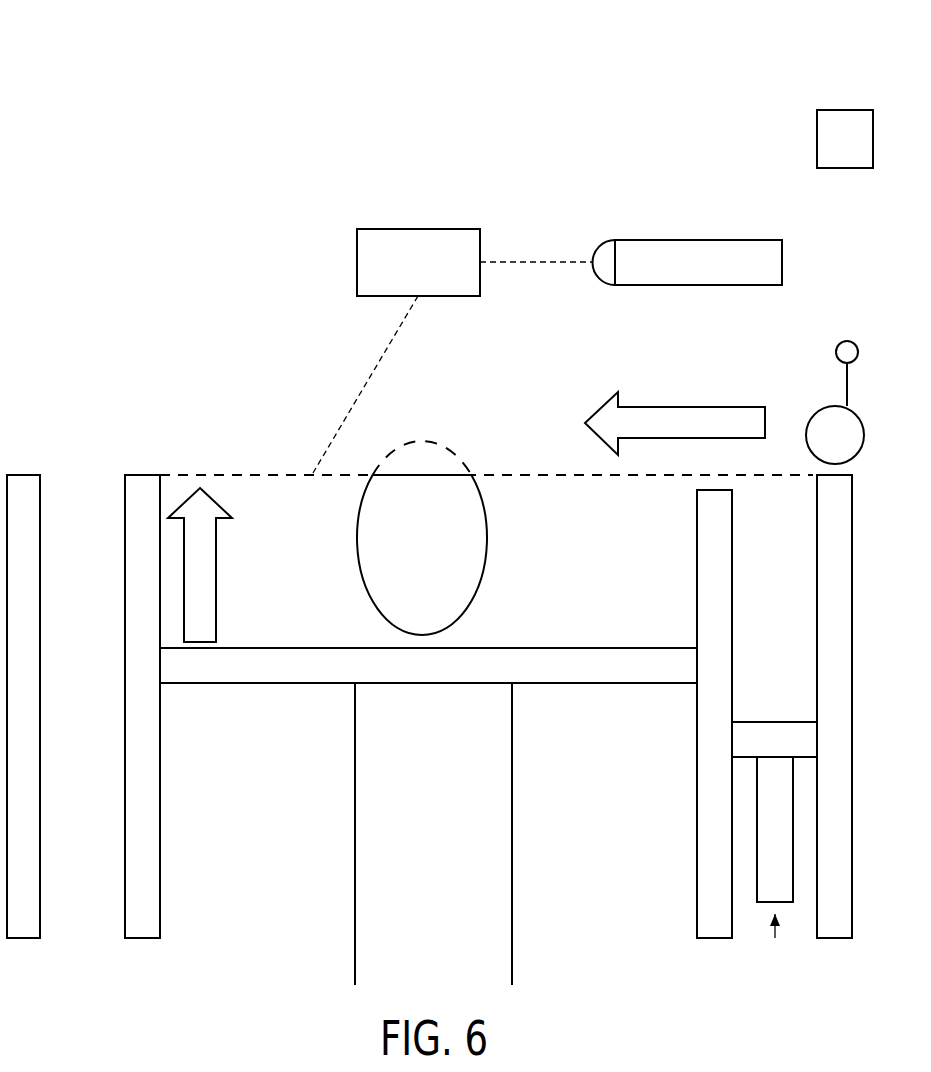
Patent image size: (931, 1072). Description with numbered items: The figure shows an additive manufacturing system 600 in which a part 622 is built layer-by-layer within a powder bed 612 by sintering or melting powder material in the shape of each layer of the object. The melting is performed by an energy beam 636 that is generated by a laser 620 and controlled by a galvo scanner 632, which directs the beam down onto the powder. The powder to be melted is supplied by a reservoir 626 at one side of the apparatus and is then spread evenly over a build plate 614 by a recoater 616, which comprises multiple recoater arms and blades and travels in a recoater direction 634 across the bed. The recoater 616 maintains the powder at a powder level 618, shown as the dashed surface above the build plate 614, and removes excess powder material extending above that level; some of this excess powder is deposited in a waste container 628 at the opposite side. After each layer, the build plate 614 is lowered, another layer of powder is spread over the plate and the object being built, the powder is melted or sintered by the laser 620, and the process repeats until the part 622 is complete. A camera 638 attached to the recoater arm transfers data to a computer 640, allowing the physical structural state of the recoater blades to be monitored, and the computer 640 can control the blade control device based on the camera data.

The additive manufacturing system 600 is at (108, 88).
The powder bed / build chamber 612 is at (548, 524).
The build plate 614 is at (645, 648).
The recoater 616 is at (835, 405).
The powder level 618 is at (211, 466).
The laser 620 is at (690, 240).
The part 622 is at (357, 545).
The reservoir 626 is at (785, 625).
The waste container 628 is at (80, 920).
The galvo scanner 632 is at (418, 229).
The recoater direction 634 is at (603, 402).
The energy beam 636 is at (362, 385).
The camera 638 is at (858, 348).
The computer 640 is at (845, 110).